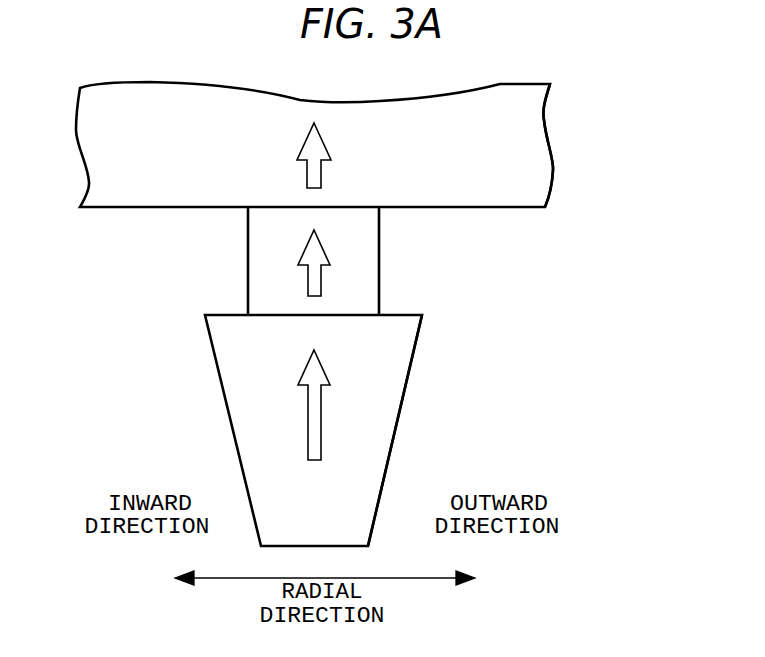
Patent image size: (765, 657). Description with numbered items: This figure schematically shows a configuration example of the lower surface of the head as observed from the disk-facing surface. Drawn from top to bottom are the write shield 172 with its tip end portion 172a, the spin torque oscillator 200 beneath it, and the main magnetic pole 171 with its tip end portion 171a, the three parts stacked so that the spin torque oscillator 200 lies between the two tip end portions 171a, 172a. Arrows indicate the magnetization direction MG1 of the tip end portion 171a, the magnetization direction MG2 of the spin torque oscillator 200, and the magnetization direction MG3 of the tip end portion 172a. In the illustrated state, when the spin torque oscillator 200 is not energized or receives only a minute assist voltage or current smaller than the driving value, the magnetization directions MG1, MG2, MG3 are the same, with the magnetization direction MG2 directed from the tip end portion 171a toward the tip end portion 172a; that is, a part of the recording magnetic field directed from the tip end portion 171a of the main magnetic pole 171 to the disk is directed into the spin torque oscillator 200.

The write shield 172 is at (572, 118).
The tip end portion of the write shield 172a is at (540, 177).
The spin torque oscillator 200 is at (368, 268).
The main magnetic pole 171 is at (452, 389).
The tip end portion of the main magnetic pole 171a is at (368, 470).
The magnetization direction of the tip end portion of the main magnetic pole MG1 is at (309, 423).
The magnetization direction of the spin torque oscillator MG2 is at (311, 283).
The magnetization direction of the tip end portion of the write shield MG3 is at (307, 168).